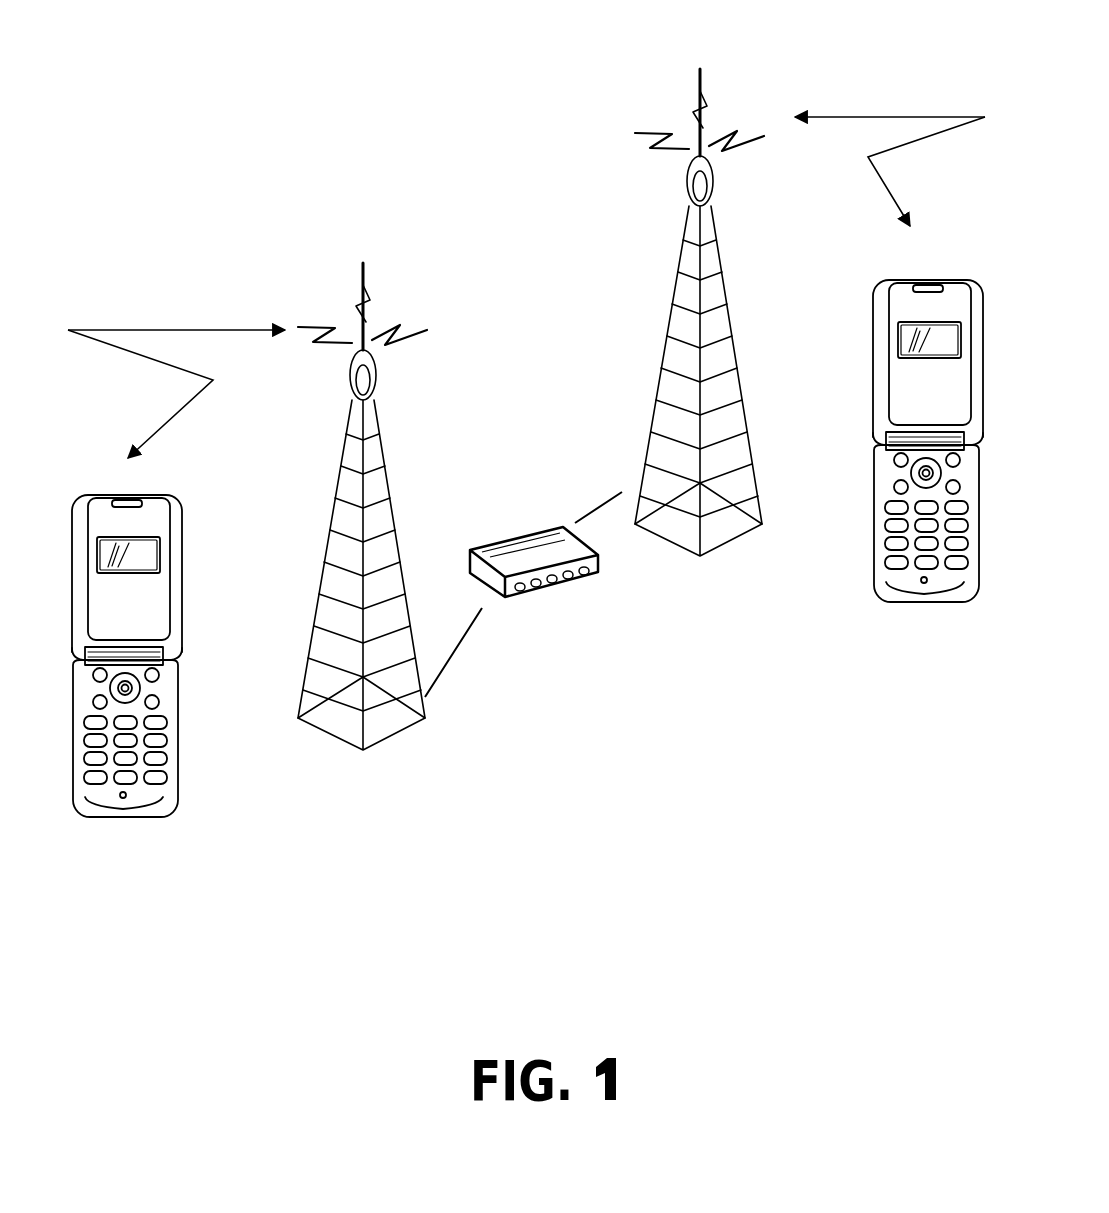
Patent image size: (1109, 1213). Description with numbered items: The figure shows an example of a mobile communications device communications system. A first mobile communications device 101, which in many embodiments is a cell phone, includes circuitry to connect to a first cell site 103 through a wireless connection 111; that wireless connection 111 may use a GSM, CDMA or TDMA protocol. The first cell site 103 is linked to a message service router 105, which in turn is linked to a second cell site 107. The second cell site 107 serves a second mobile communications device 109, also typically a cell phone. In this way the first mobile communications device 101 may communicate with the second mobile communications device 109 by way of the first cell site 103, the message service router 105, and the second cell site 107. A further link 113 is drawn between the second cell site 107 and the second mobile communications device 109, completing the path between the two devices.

The first mobile communications device 101 is at (185, 598).
The first cell site 103 is at (387, 303).
The message service router 105 is at (503, 525).
The second cell site 107 is at (725, 118).
The second mobile communications device 109 is at (952, 278).
The wireless connection 111 is at (177, 320).
The second communication link 113 is at (907, 93).